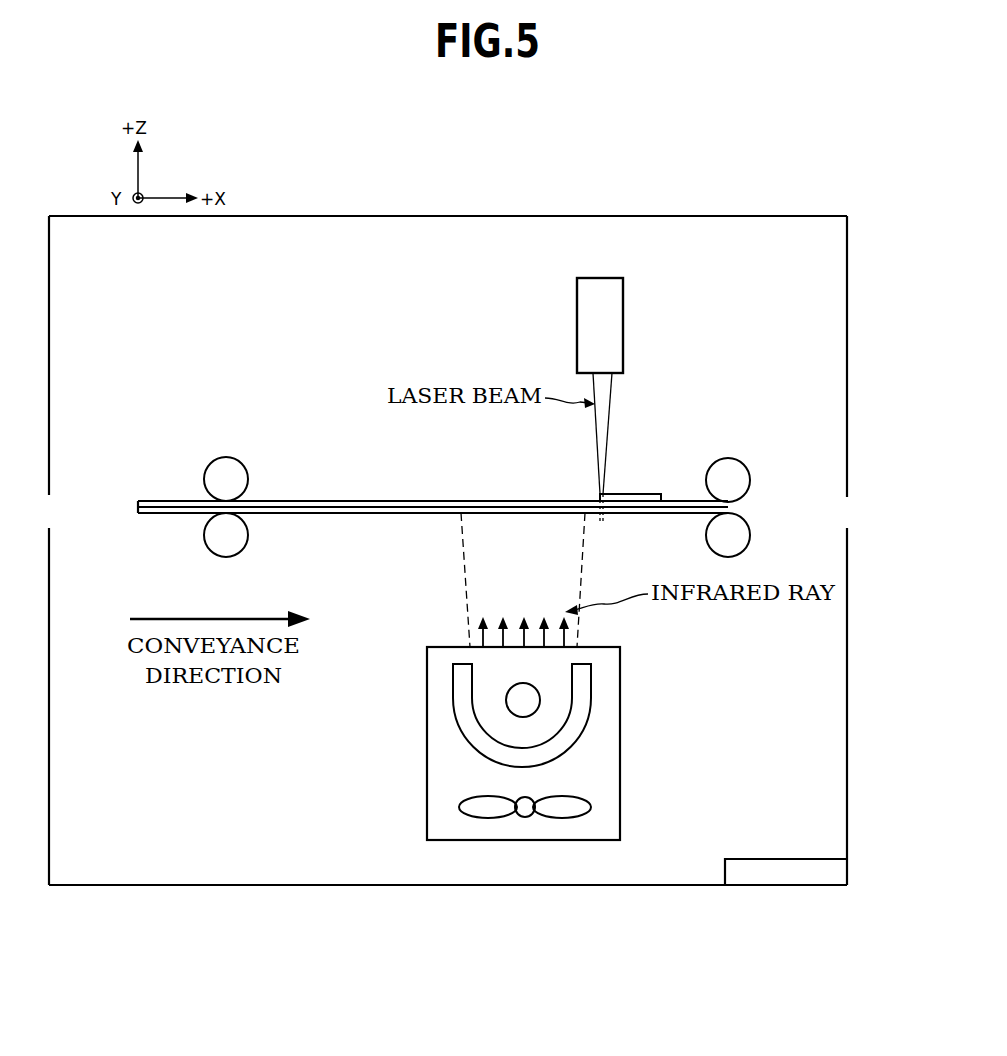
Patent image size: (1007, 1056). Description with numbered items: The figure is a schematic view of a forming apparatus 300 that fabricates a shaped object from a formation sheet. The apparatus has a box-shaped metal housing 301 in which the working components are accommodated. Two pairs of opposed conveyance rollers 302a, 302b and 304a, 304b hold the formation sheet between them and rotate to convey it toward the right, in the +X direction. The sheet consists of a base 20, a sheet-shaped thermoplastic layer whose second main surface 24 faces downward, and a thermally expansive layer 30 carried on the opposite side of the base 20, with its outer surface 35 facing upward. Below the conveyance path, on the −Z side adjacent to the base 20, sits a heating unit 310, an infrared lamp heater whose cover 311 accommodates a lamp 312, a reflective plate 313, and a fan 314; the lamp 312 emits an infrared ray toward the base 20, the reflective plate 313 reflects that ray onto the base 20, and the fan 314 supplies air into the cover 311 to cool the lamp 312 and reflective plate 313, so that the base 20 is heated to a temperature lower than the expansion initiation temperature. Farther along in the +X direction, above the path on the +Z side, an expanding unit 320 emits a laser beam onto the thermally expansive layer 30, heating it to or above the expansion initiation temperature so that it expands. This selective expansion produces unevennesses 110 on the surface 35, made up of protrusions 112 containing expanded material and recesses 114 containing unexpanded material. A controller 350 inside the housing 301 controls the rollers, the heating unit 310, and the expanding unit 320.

The forming apparatus 300 is at (768, 157).
The housing 301 is at (612, 216).
The conveyance roller 302a is at (207, 470).
The conveyance roller 302b is at (215, 554).
The conveyance roller 304a is at (742, 463).
The conveyance roller 304b is at (749, 541).
The base 20 is at (328, 508).
The second main surface 24 is at (170, 515).
The thermally expansive layer 30 is at (313, 500).
The surface 35 is at (367, 500).
The unevennesses 110 is at (664, 446).
The protrusions 112 is at (636, 494).
The recesses 114 is at (683, 500).
The expanding unit 320 is at (623, 320).
The heating unit 310 is at (328, 693).
The cover 311 is at (427, 838).
The lamp 312 is at (508, 704).
The reflective plate 313 is at (492, 758).
The fan 314 is at (460, 808).
The controller 350 is at (757, 858).